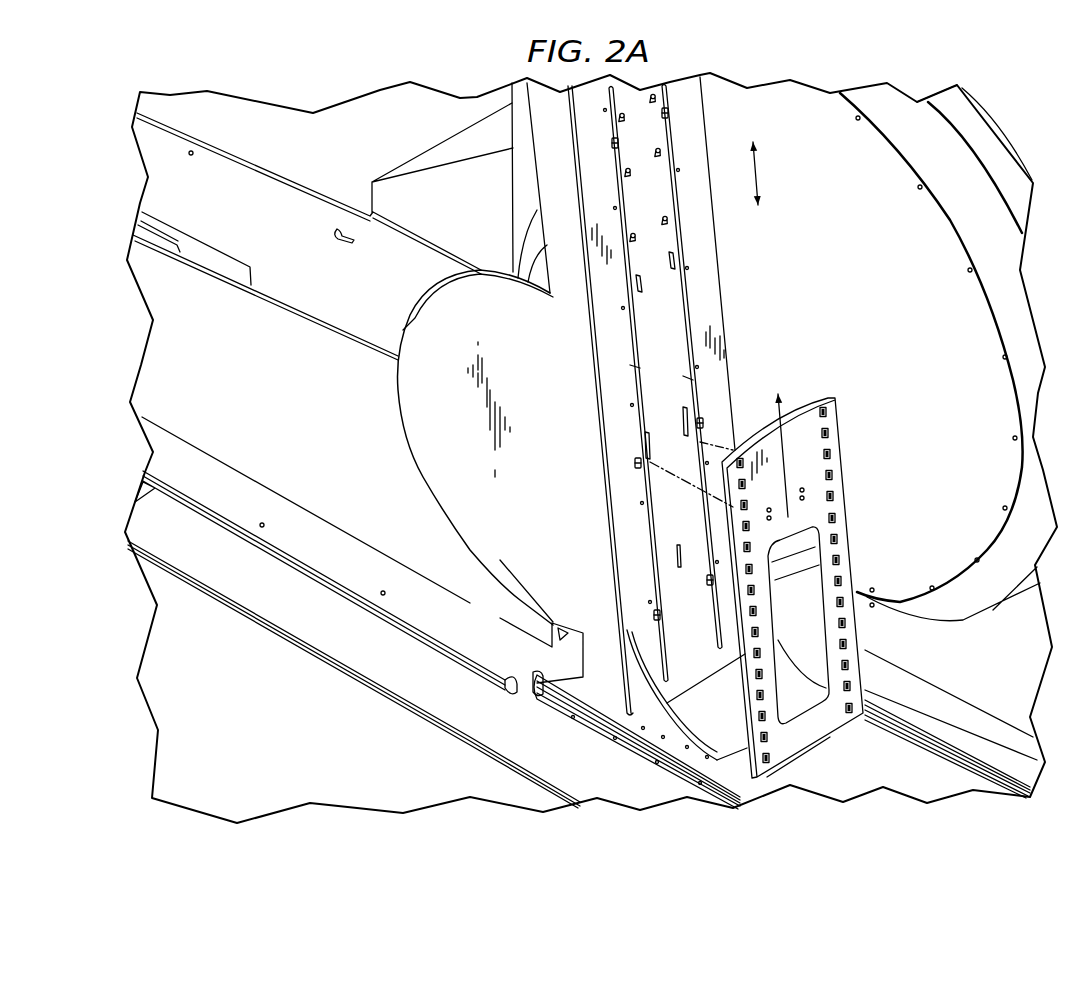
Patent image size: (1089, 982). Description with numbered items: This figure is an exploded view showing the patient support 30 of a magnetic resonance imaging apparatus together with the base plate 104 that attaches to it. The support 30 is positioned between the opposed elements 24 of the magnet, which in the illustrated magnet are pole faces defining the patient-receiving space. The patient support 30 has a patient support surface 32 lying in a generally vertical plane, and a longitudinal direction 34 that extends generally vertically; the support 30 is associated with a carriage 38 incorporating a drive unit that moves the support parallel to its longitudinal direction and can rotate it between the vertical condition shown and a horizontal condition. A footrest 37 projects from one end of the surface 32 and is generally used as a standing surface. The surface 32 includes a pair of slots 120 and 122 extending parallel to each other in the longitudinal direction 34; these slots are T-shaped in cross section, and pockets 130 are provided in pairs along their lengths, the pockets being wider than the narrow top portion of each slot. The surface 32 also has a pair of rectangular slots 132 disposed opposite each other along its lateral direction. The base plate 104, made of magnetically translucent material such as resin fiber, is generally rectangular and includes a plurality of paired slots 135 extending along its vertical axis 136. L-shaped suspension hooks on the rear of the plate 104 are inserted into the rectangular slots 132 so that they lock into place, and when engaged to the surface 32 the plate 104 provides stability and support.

The opposed elements 24 is at (847, 267).
The patient support 30 is at (570, 166).
The patient support surface 32 is at (582, 147).
The longitudinal direction 34 is at (759, 174).
The footrest 37 is at (707, 725).
The carriage 38 is at (325, 158).
The base plate 104 is at (843, 445).
The slot 120 is at (645, 362).
The slot 122 is at (690, 378).
The pockets 130 is at (703, 421).
The rectangular slots 132 is at (650, 452).
The paired slots 135 is at (742, 527).
The vertical axis 136 is at (781, 398).